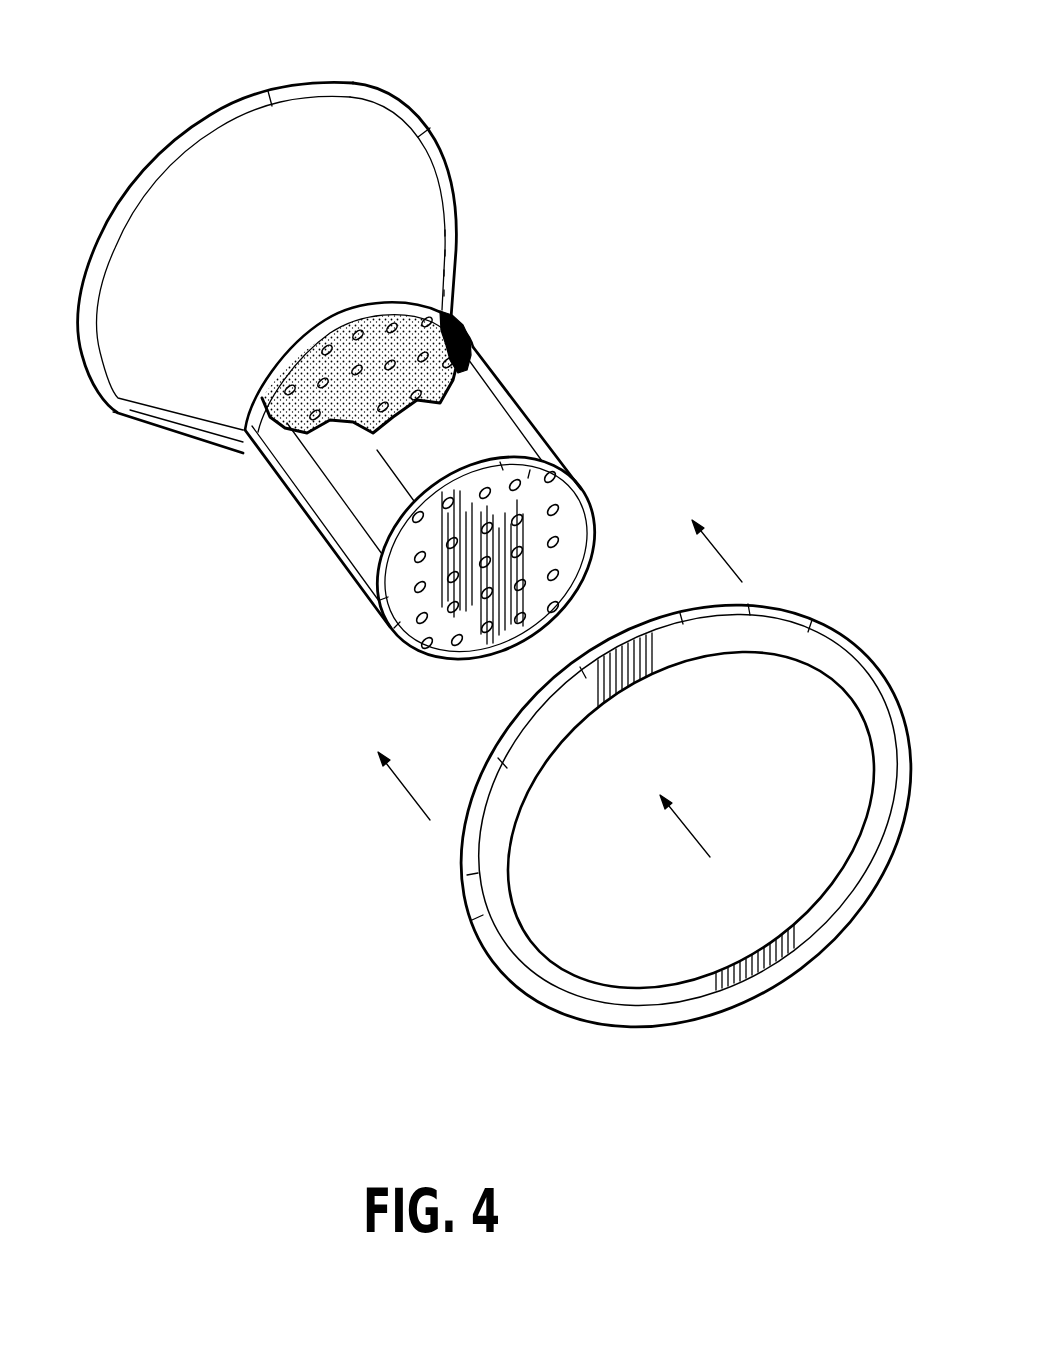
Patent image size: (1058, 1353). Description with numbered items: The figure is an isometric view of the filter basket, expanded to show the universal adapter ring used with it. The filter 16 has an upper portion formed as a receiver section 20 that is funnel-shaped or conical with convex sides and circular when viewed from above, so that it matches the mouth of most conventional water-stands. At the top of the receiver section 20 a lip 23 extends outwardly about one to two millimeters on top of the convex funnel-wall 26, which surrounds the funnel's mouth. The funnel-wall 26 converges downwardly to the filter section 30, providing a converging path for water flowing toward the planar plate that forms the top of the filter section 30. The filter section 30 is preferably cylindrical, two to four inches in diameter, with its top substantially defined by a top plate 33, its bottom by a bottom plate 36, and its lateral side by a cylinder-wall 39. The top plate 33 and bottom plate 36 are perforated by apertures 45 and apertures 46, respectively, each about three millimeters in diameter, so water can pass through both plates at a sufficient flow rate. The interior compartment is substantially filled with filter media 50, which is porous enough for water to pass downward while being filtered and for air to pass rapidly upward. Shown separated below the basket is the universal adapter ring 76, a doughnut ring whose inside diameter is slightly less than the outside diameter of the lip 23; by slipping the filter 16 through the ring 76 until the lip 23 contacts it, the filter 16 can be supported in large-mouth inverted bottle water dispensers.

The filter 16 is at (589, 271).
The receiver section 20 is at (482, 260).
The lip 23 is at (363, 82).
The funnel-wall 26 is at (190, 408).
The filter section 30 is at (585, 426).
The top plate 33 is at (327, 317).
The bottom plate 36 is at (585, 564).
The cylinder-wall 39 is at (593, 487).
The apertures 45 is at (288, 390).
The apertures 46 is at (505, 646).
The filter media 50 is at (470, 340).
The universal adapter ring 76 is at (841, 642).